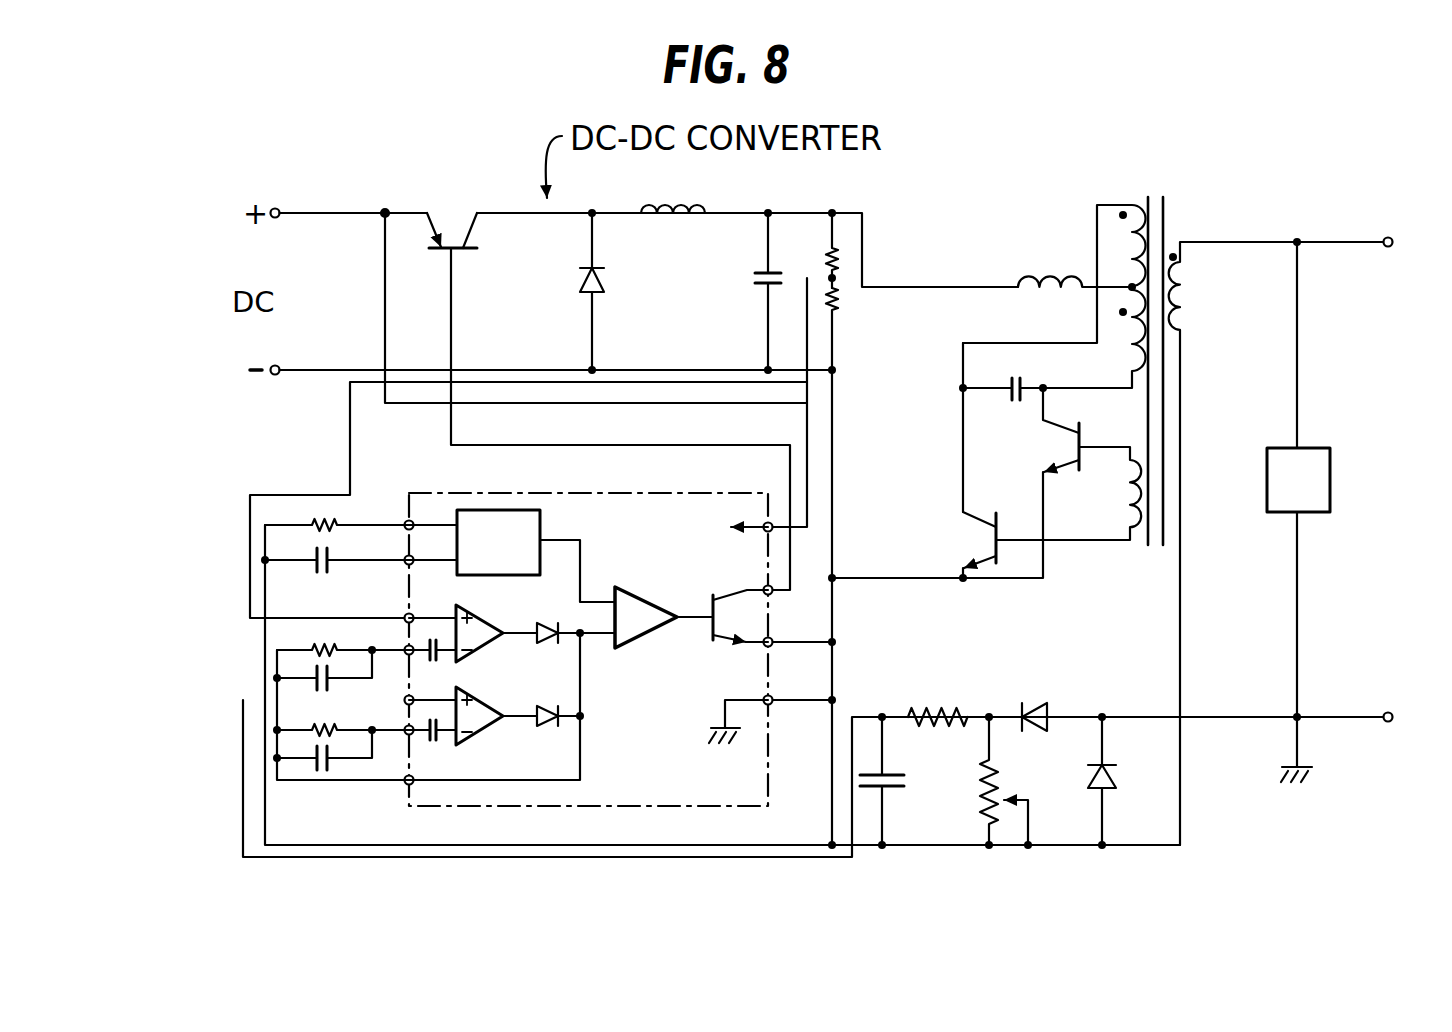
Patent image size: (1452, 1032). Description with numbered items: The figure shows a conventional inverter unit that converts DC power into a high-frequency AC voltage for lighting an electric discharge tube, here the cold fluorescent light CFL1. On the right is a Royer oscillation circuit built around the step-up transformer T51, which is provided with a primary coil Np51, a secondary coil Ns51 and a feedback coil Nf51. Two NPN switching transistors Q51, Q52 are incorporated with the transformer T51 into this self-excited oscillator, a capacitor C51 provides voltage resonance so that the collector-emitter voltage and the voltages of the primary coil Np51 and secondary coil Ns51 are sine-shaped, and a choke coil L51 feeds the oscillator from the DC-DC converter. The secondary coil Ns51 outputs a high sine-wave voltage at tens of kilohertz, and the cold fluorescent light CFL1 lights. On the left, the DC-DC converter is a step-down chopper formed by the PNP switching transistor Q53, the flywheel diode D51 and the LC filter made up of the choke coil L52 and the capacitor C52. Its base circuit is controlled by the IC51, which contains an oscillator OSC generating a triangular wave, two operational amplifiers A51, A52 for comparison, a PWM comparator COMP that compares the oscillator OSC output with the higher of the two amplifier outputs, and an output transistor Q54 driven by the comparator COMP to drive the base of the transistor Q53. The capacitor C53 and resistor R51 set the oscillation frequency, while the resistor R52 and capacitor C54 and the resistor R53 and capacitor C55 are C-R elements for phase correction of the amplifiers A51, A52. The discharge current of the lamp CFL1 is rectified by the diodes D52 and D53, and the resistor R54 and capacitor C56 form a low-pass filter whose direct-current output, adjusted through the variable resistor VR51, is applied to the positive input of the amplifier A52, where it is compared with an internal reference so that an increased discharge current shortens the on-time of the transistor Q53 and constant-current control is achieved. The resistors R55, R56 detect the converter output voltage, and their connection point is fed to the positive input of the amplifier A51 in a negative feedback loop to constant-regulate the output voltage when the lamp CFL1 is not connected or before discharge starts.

The PNP transistor for the switching operation Q53 is at (474, 251).
The flywheel diode D51 is at (565, 291).
The choke coil L52 is at (673, 187).
The capacitor C52 is at (736, 291).
The resistor R55 is at (833, 247).
The resistor R56 is at (864, 566).
The choke coil L51 is at (1075, 266).
The step-up transformer T51 is at (1158, 184).
The primary coil Np51 is at (1097, 199).
The secondary coil Ns51 is at (1185, 294).
The feedback coil Nf51 is at (1150, 490).
The capacitor for voltage resonance C51 is at (1003, 427).
The NPN transistor for a switching operation Q51 is at (1093, 430).
The NPN transistor for a switching operation Q52 is at (946, 545).
The cold fluorescent light CFL1 is at (1318, 461).
The IC for controlling DC-DC converter IC51 is at (627, 767).
The oscillator OSC is at (512, 556).
The operational amplifier A51 is at (497, 596).
The operational amplifier A52 is at (477, 735).
The PWM comparator COMP is at (636, 613).
The output transistor Q54 is at (719, 636).
The resistor R51 is at (316, 511).
The capacitor C53 is at (337, 580).
The resistor R52 is at (318, 638).
The capacitor C54 is at (317, 684).
The resistor R53 is at (318, 718).
The capacitor C55 is at (322, 777).
The resistor R54 is at (938, 698).
The diode D52 is at (1034, 701).
The capacitor C56 is at (903, 781).
The variable resistor VR51 is at (1028, 781).
The diode D53 is at (1127, 781).